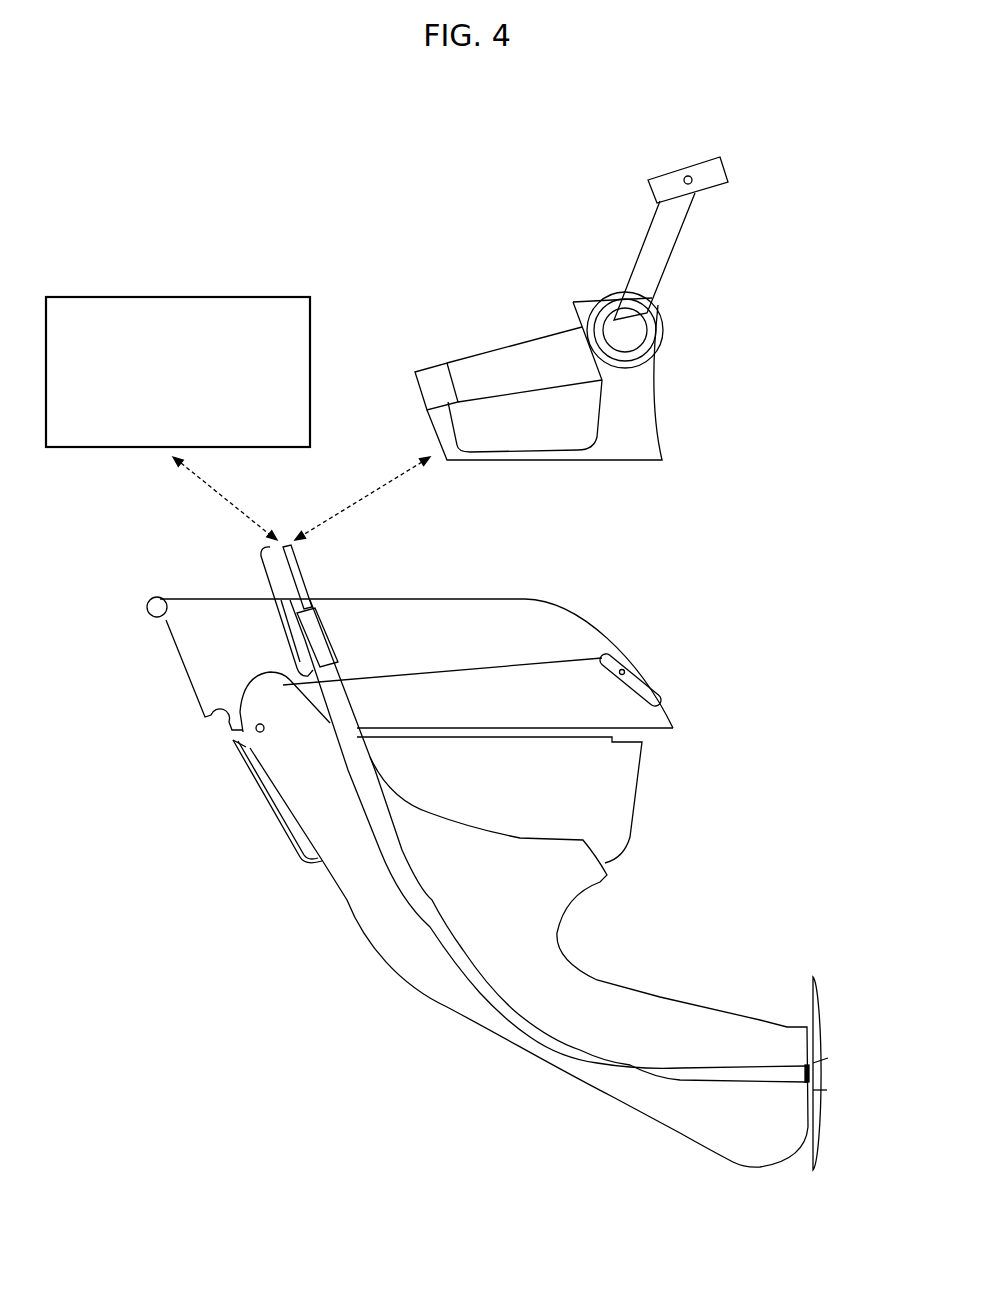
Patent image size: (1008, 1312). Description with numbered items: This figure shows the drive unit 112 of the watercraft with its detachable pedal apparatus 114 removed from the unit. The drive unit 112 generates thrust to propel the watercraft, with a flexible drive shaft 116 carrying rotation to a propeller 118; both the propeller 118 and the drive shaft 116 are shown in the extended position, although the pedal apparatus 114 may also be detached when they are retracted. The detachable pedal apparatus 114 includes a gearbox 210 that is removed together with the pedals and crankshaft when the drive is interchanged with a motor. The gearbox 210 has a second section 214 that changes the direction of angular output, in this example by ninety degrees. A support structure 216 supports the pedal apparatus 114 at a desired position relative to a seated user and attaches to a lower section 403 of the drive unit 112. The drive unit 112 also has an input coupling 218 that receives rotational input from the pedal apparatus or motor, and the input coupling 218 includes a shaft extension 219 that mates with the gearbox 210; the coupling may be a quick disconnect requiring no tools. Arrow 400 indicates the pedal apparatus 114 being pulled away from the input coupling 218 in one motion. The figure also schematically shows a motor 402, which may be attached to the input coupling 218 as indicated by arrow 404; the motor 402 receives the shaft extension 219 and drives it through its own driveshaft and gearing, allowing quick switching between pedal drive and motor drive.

The drive unit 112 is at (108, 106).
The detachable pedal apparatus 114 is at (405, 153).
The drive shaft 116 is at (470, 944).
The propeller 118 is at (846, 1076).
The gearbox 210 is at (623, 270).
The second section 214 is at (416, 390).
The support structure 216 is at (640, 408).
The input coupling 218 is at (280, 628).
The shaft extension 219 is at (297, 573).
The arrow 400 is at (375, 490).
The motor 402 is at (50, 298).
The lower section 403 is at (457, 599).
The arrow 404 is at (231, 504).